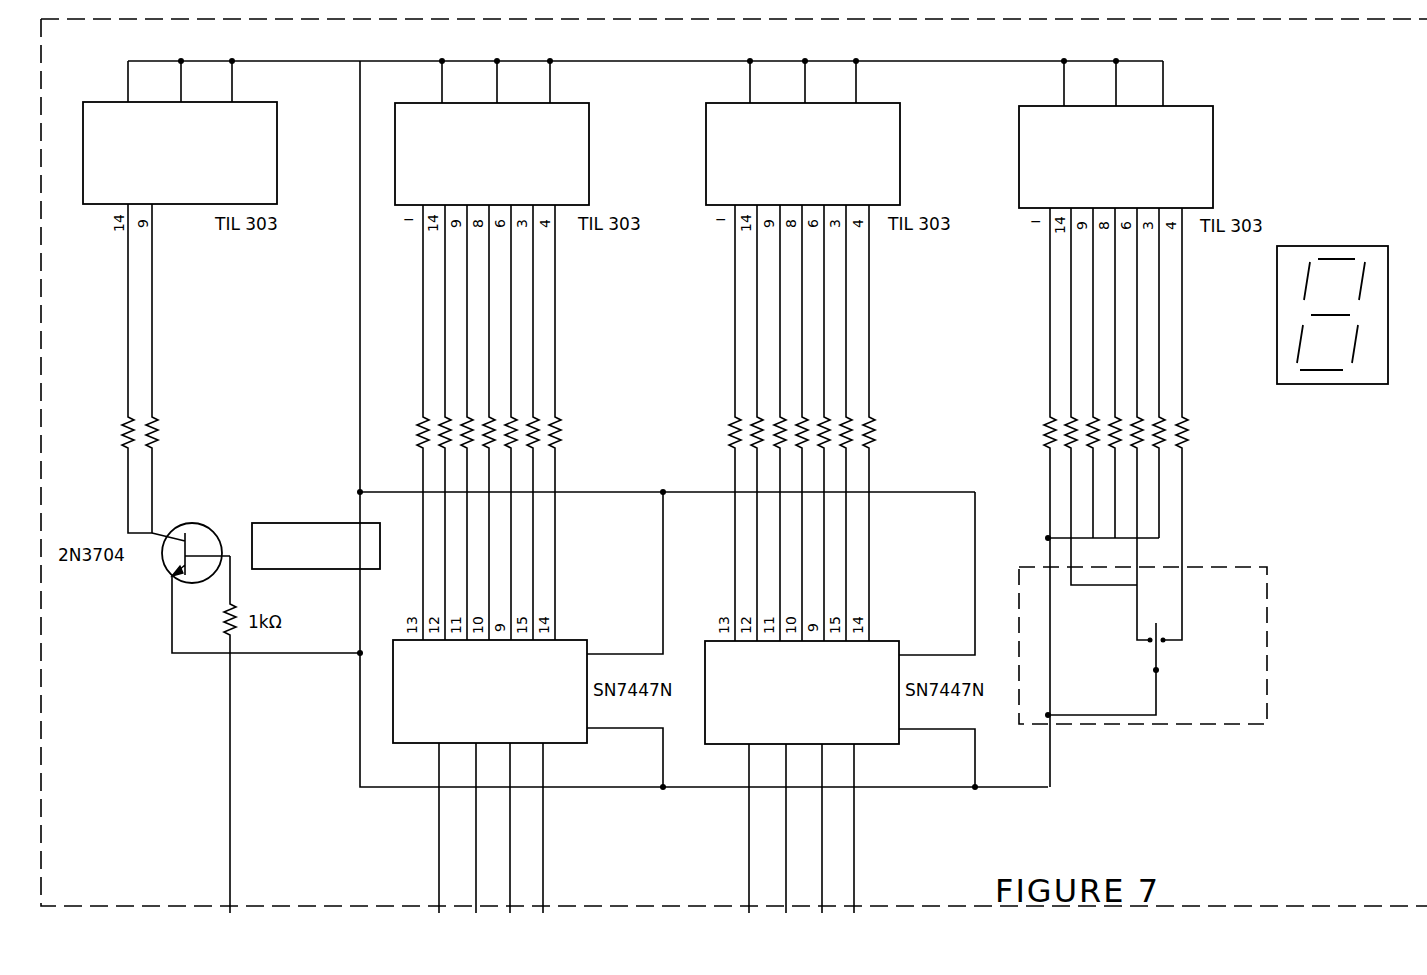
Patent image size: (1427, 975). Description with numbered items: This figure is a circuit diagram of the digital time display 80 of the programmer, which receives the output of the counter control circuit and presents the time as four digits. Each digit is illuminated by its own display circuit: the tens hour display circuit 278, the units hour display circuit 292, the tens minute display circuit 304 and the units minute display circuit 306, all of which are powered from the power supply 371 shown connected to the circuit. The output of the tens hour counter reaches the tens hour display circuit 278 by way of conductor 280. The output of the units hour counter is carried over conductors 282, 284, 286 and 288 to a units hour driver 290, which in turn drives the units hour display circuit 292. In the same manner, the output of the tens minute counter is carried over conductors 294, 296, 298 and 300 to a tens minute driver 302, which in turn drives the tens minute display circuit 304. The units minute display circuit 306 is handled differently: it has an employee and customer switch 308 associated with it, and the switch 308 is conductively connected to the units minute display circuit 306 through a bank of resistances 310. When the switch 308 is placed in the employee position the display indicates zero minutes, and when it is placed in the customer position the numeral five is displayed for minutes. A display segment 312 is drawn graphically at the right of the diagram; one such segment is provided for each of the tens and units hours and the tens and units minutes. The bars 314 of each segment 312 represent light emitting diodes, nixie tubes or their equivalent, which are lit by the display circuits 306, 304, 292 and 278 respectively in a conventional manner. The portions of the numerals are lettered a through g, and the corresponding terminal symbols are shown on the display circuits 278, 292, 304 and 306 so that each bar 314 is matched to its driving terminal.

The digital time display 80 is at (1340, 23).
The tens hour display circuit 278 is at (277, 158).
The conductor 280 is at (229, 833).
The conductor 282 is at (439, 838).
The conductor 284 is at (476, 845).
The conductor 286 is at (510, 858).
The conductor 288 is at (543, 875).
The units hour driver 290 is at (587, 640).
The units hour display circuit 292 is at (589, 160).
The conductor 294 is at (749, 840).
The conductor 296 is at (786, 845).
The conductor 298 is at (822, 858).
The conductor 300 is at (854, 875).
The tens minute driver 302 is at (899, 641).
The tens minute display circuit 304 is at (900, 160).
The units minute display circuit 306 is at (1213, 162).
The employee and customer switch 308 is at (1268, 592).
The bank of resistances 310 is at (1035, 432).
The display segment 312 is at (1277, 262).
The bars 314 is at (1360, 331).
The power supply 371 is at (300, 522).